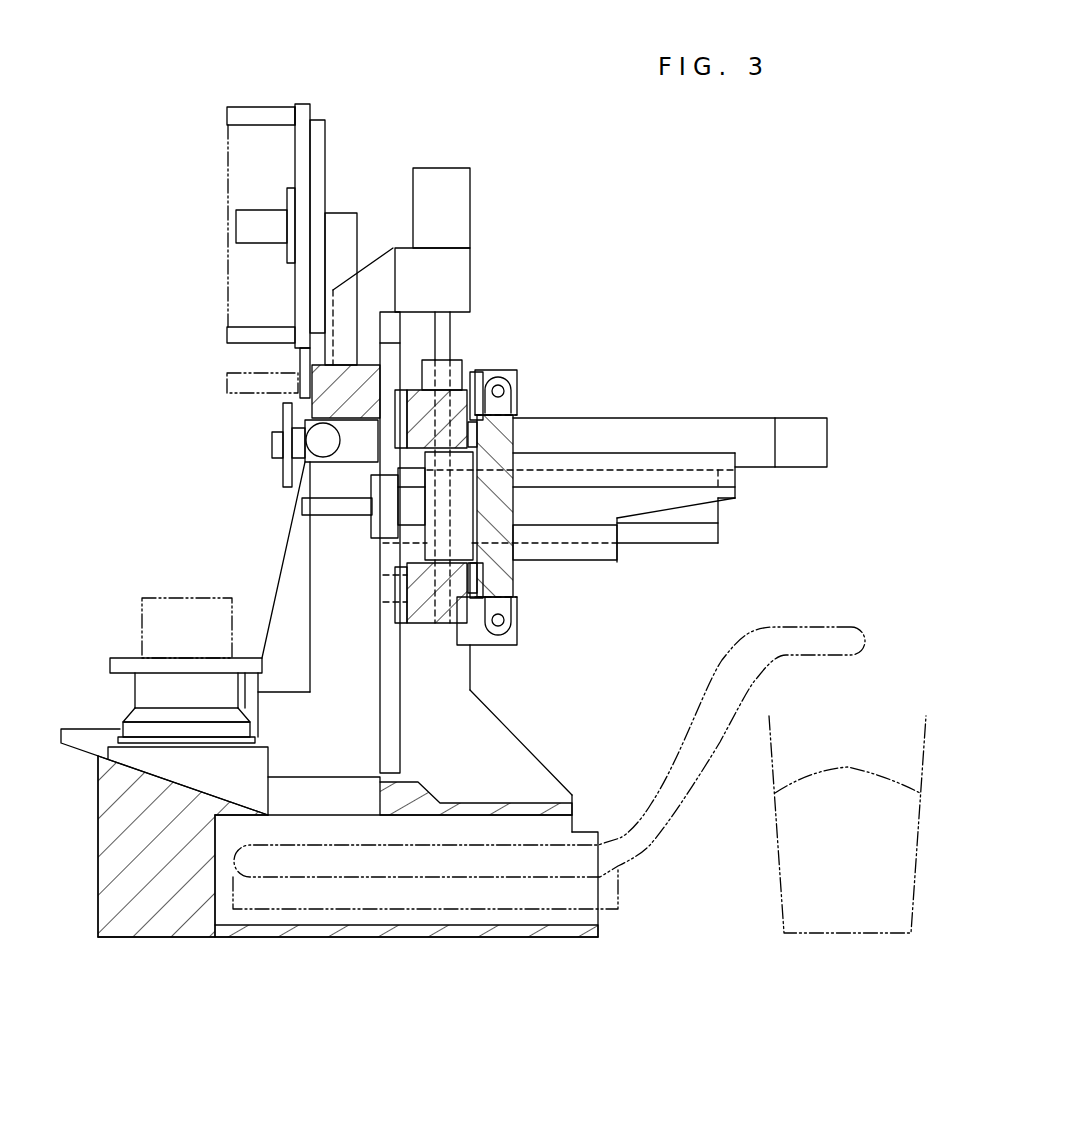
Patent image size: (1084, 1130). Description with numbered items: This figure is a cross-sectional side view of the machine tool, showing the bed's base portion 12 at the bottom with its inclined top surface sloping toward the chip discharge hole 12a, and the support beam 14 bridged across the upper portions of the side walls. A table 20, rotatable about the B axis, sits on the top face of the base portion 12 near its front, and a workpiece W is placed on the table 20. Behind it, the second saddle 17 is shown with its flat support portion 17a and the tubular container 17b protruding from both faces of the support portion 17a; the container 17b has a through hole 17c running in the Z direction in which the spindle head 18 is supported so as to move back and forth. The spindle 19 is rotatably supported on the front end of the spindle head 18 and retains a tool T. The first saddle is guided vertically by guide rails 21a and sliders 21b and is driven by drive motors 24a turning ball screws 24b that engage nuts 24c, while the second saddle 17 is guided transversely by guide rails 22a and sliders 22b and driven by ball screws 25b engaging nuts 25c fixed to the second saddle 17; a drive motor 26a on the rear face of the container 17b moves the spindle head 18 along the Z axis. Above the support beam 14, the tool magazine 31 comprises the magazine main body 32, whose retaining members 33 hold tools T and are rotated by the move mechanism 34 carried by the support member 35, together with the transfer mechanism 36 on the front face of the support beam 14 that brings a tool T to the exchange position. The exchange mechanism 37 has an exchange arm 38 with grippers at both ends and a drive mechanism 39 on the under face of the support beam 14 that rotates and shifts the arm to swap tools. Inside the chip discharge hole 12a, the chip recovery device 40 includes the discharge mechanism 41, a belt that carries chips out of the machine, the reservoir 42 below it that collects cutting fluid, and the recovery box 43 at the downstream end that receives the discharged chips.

The base portion 12 is at (157, 930).
The chip discharge hole 12a is at (215, 897).
The support beam 14 is at (360, 372).
The second saddle 17 is at (655, 393).
The support portion 17a is at (505, 568).
The container 17b is at (662, 458).
The through hole 17c is at (692, 470).
The spindle head 18 is at (710, 533).
The spindle 19 is at (375, 528).
The table 20 is at (122, 663).
The guide rails 21a is at (393, 747).
The sliders 21b is at (403, 392).
The guide rails 22a is at (478, 432).
The sliders 22b is at (478, 372).
The drive motors 24a is at (463, 192).
The ball screws 24b is at (445, 328).
The nuts 24c is at (455, 357).
The ball screws 25b is at (517, 370).
The nuts 25c is at (507, 402).
The drive motor 26a is at (795, 427).
The tool magazine 31 is at (188, 290).
The magazine main body 32 is at (349, 96).
The retaining members 33 is at (302, 103).
The move mechanism 34 is at (215, 192).
The support member 35 is at (337, 222).
The transfer mechanism 36 is at (303, 358).
The exchange mechanism 37 is at (217, 452).
The exchange arm 38 is at (282, 412).
The drive mechanism 39 is at (343, 457).
The chip recovery device 40 is at (716, 940).
The discharge mechanism 41 is at (472, 870).
The reservoir 42 is at (422, 903).
The recovery box 43 is at (807, 928).
The tool T is at (249, 112).
The workpiece W is at (167, 602).